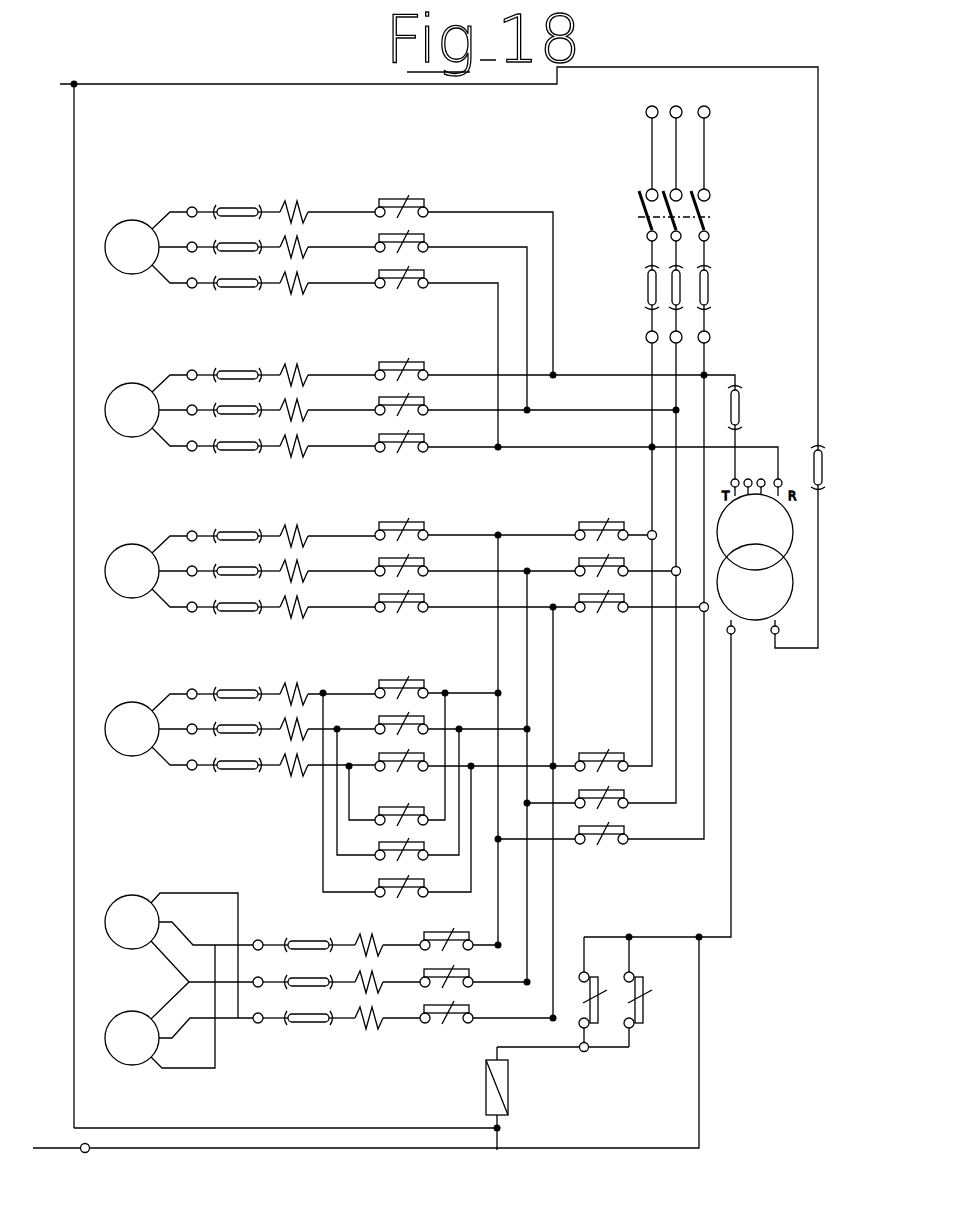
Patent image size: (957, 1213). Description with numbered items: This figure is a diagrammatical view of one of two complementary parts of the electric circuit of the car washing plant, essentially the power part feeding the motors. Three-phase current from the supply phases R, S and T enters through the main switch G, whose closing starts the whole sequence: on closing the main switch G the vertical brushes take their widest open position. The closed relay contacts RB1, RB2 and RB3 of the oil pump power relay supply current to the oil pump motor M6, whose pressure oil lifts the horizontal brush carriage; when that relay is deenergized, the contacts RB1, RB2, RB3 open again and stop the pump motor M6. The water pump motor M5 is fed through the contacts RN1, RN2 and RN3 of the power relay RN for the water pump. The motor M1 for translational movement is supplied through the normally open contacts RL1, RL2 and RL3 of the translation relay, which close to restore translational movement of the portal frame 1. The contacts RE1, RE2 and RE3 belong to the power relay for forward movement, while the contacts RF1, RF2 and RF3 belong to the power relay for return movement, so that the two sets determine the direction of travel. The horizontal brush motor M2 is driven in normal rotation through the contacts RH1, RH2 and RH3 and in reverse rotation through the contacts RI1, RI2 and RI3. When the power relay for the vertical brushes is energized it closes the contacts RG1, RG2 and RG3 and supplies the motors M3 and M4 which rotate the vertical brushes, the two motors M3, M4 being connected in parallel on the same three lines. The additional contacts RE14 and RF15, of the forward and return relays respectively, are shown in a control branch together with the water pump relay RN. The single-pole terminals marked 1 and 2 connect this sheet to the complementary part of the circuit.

The motor for translational movement M1 is at (240, 571).
The motor for horizontal brush M2 is at (240, 729).
The motor for vertical brush M3 is at (179, 955).
The motor for vertical brush M4 is at (179, 1006).
The motor for water pump M5 is at (240, 410).
The motor for oil pumps M6 is at (240, 247).
The relay contact RB1 is at (401, 271).
The relay contact RB2 is at (401, 235).
The relay contact RB3 is at (401, 200).
The relay contact RN1 is at (401, 435).
The relay contact RN2 is at (401, 398).
The relay contact RN3 is at (401, 363).
The relay contact RL1 is at (401, 523).
The relay contact RL2 is at (401, 559).
The relay contact RL3 is at (401, 595).
The relay contact RE1 is at (601, 523).
The relay contact RE2 is at (601, 559).
The relay contact RE3 is at (601, 595).
The relay contact RH1 is at (401, 681).
The relay contact RH2 is at (401, 717).
The relay contact RH3 is at (401, 754).
The relay contact RI1 is at (397, 759).
The relay contact RI2 is at (398, 795).
The relay contact RI3 is at (397, 795).
The relay contact RF1 is at (601, 754).
The relay contact RF2 is at (601, 791).
The relay contact RF3 is at (601, 827).
The relay contact RG1 is at (446, 933).
The relay contact RG2 is at (446, 970).
The relay contact RG3 is at (446, 1006).
The relay contact RE14 is at (604, 994).
The relay contact RF15 is at (654, 992).
The power relay for water pump motor RN is at (517, 1098).
The supply phase R is at (643, 427).
The supply phase S is at (655, 446).
The supply phase T is at (669, 464).
The main switch G is at (632, 203).
The portal frame 1 is at (781, 629).
The transformer terminal 2 is at (659, 778).